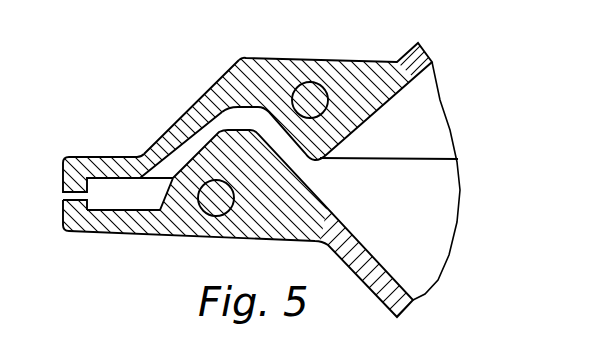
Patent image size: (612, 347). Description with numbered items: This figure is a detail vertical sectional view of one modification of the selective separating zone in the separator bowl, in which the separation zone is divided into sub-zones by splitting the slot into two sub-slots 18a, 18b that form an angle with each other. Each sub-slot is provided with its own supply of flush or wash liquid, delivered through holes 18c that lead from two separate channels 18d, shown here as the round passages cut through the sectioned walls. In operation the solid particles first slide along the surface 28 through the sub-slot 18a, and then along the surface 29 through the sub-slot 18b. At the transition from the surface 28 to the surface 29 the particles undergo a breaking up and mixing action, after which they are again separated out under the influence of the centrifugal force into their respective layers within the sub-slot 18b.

The sub-slot 18a is at (272, 137).
The sub-slot 18b is at (179, 120).
The holes 18c is at (195, 172).
The channels 18d is at (312, 92).
The surface 28 is at (323, 205).
The surface 29 is at (168, 162).